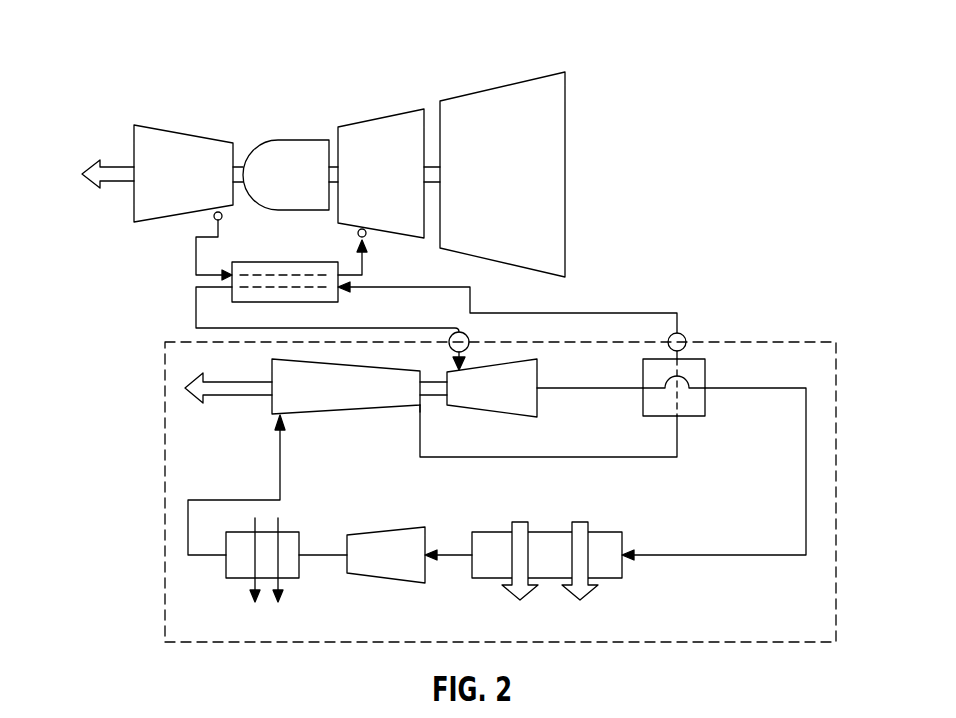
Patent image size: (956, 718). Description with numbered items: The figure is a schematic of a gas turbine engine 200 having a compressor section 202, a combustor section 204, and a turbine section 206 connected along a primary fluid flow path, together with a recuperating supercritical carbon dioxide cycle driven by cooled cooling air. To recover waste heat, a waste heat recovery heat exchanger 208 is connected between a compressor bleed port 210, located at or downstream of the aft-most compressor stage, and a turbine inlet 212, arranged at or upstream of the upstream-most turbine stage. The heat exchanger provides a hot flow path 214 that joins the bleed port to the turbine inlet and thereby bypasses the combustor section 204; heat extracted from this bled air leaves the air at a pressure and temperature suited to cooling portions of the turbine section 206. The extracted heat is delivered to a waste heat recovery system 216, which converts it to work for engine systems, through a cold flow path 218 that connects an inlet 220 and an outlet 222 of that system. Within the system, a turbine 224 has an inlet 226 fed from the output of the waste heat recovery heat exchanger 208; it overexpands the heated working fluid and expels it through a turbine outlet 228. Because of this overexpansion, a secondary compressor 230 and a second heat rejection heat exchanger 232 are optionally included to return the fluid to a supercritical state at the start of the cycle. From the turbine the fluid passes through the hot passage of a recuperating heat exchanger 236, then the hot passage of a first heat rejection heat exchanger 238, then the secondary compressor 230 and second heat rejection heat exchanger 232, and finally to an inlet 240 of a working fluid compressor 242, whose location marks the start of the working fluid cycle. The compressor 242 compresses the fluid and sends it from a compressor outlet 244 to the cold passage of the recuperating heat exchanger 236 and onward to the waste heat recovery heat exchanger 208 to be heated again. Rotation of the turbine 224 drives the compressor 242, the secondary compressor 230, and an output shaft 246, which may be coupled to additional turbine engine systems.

The gas turbine engine 200 is at (110, 35).
The compressor section 202 is at (163, 128).
The combustor section 204 is at (278, 138).
The turbine section 206 is at (338, 65).
The waste heat recovery heat exchanger 208 is at (281, 262).
The compressor bleed port 210 is at (214, 212).
The turbine inlet 212 is at (366, 238).
The hot flow path 214 is at (250, 287).
The waste heat recovery system 216 is at (836, 482).
The cold flow path 218 is at (248, 288).
The inlet of the waste heat recovery system 220 is at (465, 334).
The outlet of the waste heat recovery system 222 is at (684, 335).
The turbine 224 is at (513, 418).
The inlet 226 is at (445, 370).
The turbine outlet 228 is at (540, 393).
The secondary compressor 230 is at (400, 582).
The second heat rejection heat exchanger 232 is at (240, 578).
The recuperating heat exchanger 236 is at (692, 417).
The first heat rejection heat exchanger 238 is at (625, 540).
The inlet 240 is at (272, 417).
The compressor 242 is at (293, 417).
The compressor outlet 244 is at (408, 407).
The output shaft 246 is at (218, 397).